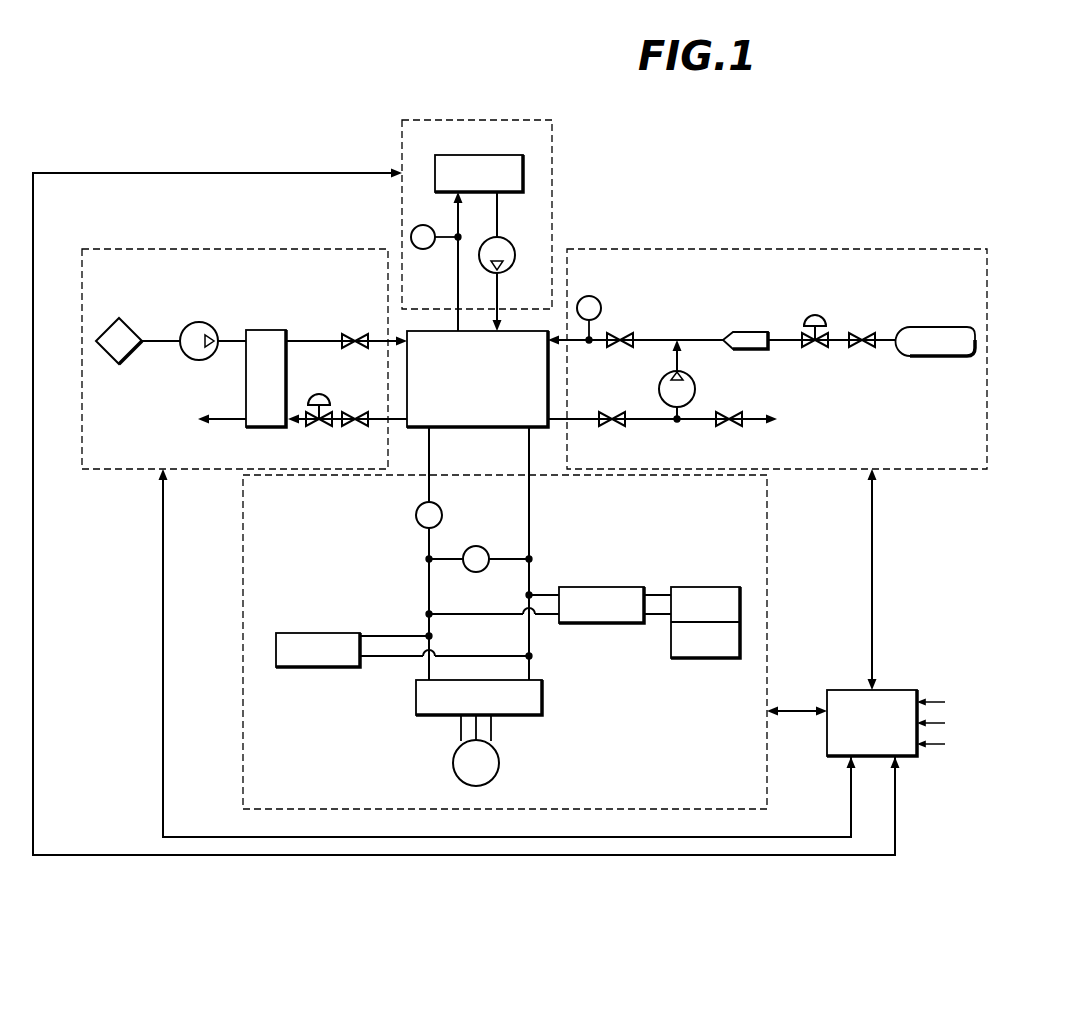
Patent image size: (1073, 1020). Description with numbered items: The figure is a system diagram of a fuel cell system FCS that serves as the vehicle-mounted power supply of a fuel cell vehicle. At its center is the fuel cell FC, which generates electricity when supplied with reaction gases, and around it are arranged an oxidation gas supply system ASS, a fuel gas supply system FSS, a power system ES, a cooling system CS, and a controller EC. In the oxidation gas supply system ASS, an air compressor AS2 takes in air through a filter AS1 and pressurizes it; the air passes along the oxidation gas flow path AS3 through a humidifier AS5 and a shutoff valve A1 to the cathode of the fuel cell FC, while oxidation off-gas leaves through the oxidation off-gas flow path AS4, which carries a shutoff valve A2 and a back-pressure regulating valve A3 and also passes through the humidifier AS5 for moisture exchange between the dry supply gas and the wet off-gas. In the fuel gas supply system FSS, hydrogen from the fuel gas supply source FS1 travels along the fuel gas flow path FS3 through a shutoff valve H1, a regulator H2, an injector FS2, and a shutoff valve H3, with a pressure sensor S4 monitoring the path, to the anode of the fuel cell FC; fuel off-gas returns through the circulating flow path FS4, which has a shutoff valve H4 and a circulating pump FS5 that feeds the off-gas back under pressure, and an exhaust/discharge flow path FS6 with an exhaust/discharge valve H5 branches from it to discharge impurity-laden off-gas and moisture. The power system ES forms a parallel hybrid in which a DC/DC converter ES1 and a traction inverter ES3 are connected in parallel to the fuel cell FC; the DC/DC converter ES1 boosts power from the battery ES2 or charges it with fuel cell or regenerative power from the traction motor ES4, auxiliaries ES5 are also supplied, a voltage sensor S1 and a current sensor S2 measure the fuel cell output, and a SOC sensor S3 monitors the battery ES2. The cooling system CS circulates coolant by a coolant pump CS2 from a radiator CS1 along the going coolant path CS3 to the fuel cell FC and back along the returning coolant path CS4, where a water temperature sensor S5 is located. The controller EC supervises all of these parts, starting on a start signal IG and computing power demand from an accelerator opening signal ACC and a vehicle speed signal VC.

The fuel cell system FCS is at (1019, 204).
The fuel cell FC is at (467, 427).
The cooling system CS is at (552, 155).
The radiator CS1 is at (470, 155).
The coolant pump CS2 is at (514, 252).
The going coolant path CS3 is at (497, 215).
The returning coolant path CS4 is at (456, 300).
The water temperature sensor S5 is at (412, 228).
The oxidation gas supply system ASS is at (230, 249).
The filter AS1 is at (130, 328).
The air compressor AS2 is at (198, 322).
The humidifier AS5 is at (270, 330).
The oxidation gas flow path AS3 is at (303, 339).
The oxidation off-gas flow path AS4 is at (375, 412).
The shutoff valve A1 is at (352, 334).
The shutoff valve A2 is at (347, 427).
The back-pressure regulating valve A3 is at (320, 392).
The fuel gas supply system FSS is at (987, 305).
The fuel gas supply source FS1 is at (930, 327).
The injector FS2 is at (746, 331).
The fuel gas flow path FS3 is at (655, 339).
The circulating flow path FS4 is at (645, 421).
The circulating pump FS5 is at (696, 386).
The exhaust/discharge flow path FS6 is at (750, 418).
The shutoff valve H1 is at (862, 333).
The regulator H2 is at (815, 315).
The shutoff valve H3 is at (620, 333).
The shutoff valve H4 is at (612, 427).
The exhaust/discharge valve H5 is at (729, 427).
The pressure sensor S4 is at (590, 296).
The power system ES is at (767, 580).
The DC/DC converter ES1 is at (597, 586).
The battery ES2 is at (707, 586).
The traction inverter ES3 is at (542, 703).
The traction motor ES4 is at (499, 763).
The auxiliaries ES5 is at (318, 633).
The voltage sensor S1 is at (479, 546).
The current sensor S2 is at (417, 526).
The SOC sensor S3 is at (703, 658).
The controller EC is at (893, 690).
The start signal IG is at (940, 703).
The vehicle speed signal VC is at (942, 724).
The accelerator opening signal ACC is at (947, 745).